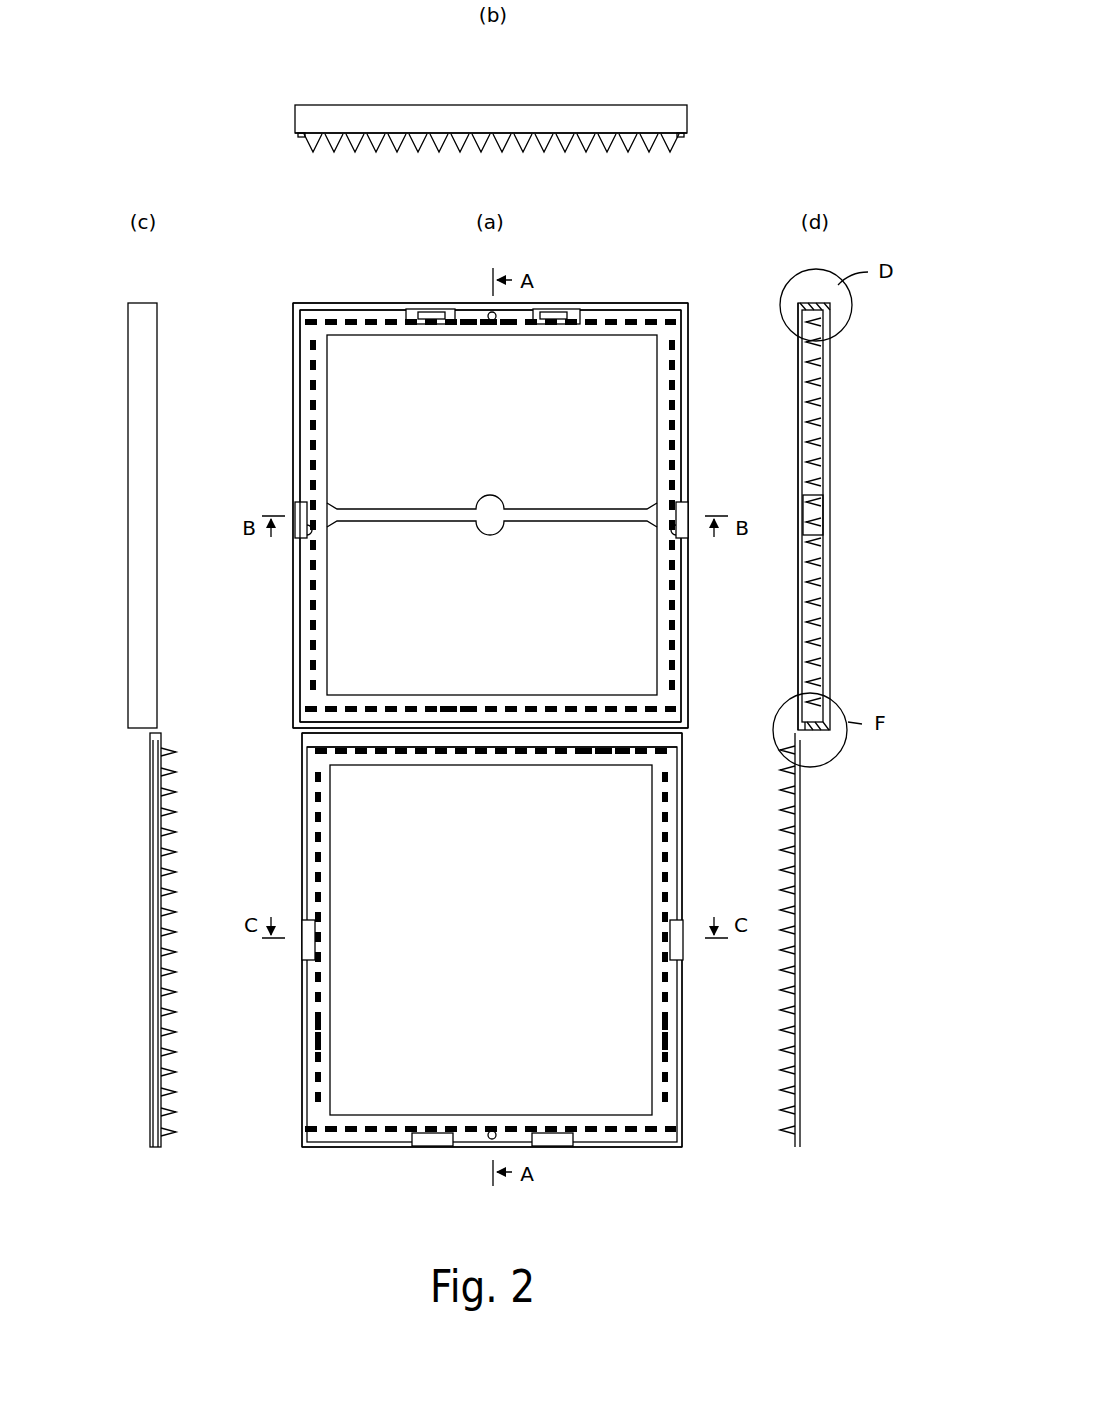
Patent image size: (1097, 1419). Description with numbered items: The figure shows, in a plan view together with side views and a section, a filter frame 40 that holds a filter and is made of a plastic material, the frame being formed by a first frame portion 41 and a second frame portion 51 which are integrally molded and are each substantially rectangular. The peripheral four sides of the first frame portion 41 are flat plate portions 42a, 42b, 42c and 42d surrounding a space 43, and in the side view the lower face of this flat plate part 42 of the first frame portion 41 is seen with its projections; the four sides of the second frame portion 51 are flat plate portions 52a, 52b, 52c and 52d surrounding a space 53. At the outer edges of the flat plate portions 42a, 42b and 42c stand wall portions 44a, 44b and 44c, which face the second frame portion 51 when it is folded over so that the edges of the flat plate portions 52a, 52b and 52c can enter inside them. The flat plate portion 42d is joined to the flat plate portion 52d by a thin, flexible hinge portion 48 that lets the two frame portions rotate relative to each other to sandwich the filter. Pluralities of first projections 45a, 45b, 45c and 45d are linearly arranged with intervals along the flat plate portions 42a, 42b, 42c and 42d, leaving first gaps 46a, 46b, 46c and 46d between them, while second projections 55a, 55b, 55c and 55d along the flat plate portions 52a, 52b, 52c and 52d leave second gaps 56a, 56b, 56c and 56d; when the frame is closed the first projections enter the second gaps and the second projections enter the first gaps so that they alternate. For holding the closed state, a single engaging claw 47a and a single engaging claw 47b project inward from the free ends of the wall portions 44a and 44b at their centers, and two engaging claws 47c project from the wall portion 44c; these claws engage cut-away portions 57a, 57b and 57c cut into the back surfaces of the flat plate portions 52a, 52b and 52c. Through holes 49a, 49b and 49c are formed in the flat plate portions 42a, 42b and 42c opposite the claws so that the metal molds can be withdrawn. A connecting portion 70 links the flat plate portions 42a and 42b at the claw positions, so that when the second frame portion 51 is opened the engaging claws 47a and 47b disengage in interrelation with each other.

The filter frame 40 is at (646, 100).
The first frame portion 41 is at (392, 100).
The first frame bottom wall 42 is at (672, 140).
The flat plate portion 42a is at (684, 404).
The flat plate portion 42b is at (300, 655).
The flat plate portion 42c is at (598, 304).
The flat plate portion 42d is at (553, 725).
The space 43 is at (357, 366).
The wall portion 44a is at (686, 655).
The wall portion 44b is at (303, 565).
The wall portion 44c is at (578, 115).
The first projections 45a is at (676, 620).
The first projections 45b is at (307, 352).
The first projections 45c is at (528, 320).
The first projections 45d is at (588, 708).
The first gaps 46a is at (676, 437).
The first gaps 46b is at (310, 598).
The first gaps 46c is at (472, 326).
The first gaps 46d is at (452, 707).
The engaging claw 47a is at (680, 502).
The engaging claw 47b is at (298, 500).
The engaging claws 47c is at (433, 309).
The hinge portion 48 is at (415, 735).
The through hole 49a is at (668, 532).
The through hole 49b is at (316, 530).
The through holes 49c is at (432, 322).
The second frame portion 51 is at (650, 1152).
The flat plate portion 52a is at (683, 822).
The flat plate portion 52b is at (305, 865).
The flat plate portion 52c is at (358, 1140).
The flat plate portion 52d is at (543, 754).
The space 53 is at (358, 800).
The second projections 55a is at (678, 1000).
The second projections 55b is at (308, 1038).
The second projections 55c is at (514, 134).
The second projections 55d is at (470, 754).
The second gaps 56a is at (668, 1035).
The second gaps 56b is at (318, 990).
The second gaps 56c is at (452, 150).
The second gaps 56d is at (603, 754).
The cut-away portion 57a is at (680, 958).
The cut-away portion 57b is at (312, 957).
The cut-away portions 57c is at (435, 1147).
The connecting portion 70 is at (425, 508).